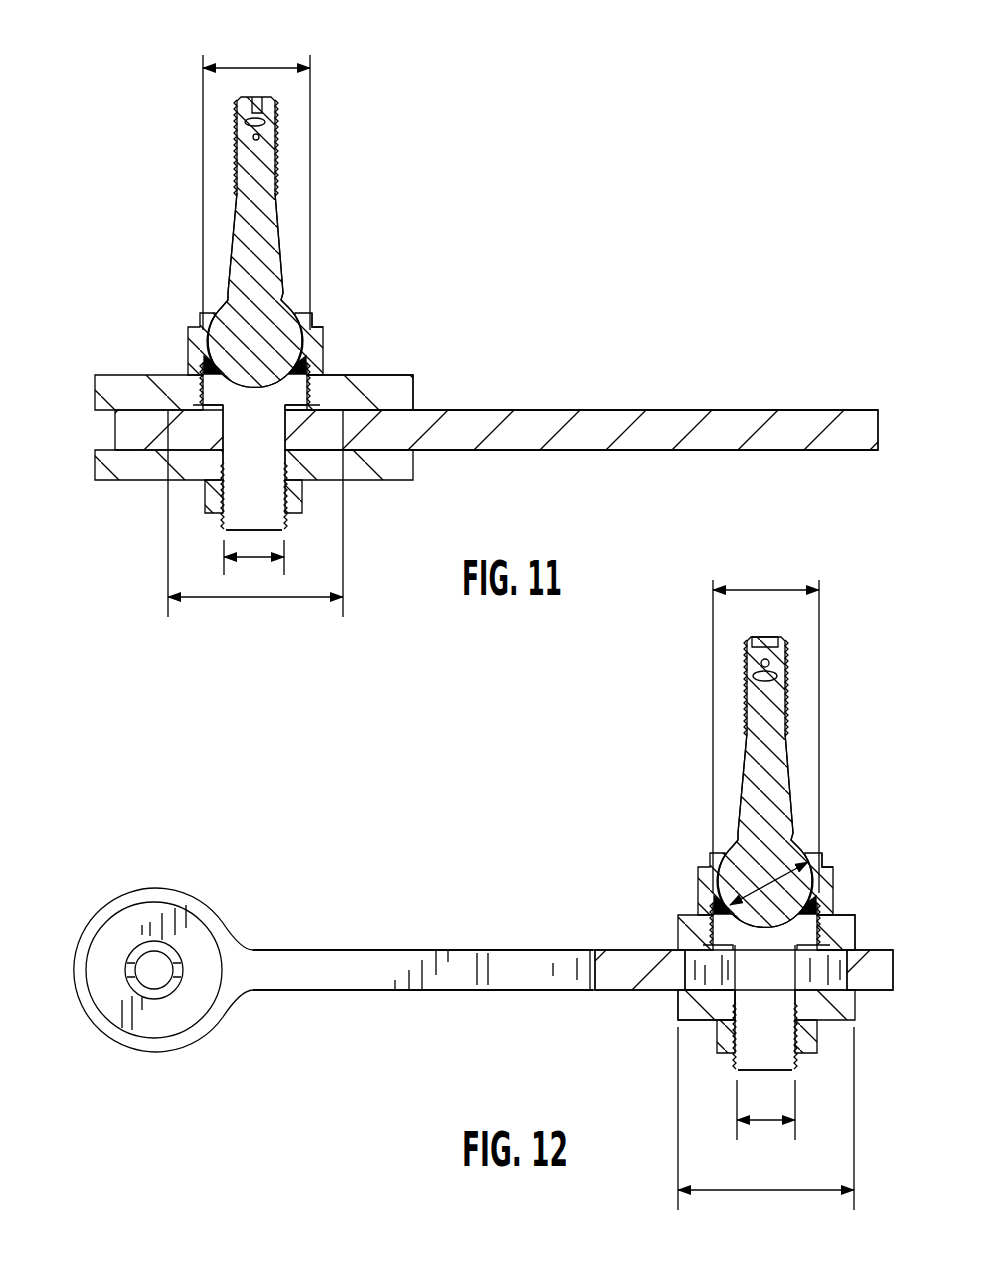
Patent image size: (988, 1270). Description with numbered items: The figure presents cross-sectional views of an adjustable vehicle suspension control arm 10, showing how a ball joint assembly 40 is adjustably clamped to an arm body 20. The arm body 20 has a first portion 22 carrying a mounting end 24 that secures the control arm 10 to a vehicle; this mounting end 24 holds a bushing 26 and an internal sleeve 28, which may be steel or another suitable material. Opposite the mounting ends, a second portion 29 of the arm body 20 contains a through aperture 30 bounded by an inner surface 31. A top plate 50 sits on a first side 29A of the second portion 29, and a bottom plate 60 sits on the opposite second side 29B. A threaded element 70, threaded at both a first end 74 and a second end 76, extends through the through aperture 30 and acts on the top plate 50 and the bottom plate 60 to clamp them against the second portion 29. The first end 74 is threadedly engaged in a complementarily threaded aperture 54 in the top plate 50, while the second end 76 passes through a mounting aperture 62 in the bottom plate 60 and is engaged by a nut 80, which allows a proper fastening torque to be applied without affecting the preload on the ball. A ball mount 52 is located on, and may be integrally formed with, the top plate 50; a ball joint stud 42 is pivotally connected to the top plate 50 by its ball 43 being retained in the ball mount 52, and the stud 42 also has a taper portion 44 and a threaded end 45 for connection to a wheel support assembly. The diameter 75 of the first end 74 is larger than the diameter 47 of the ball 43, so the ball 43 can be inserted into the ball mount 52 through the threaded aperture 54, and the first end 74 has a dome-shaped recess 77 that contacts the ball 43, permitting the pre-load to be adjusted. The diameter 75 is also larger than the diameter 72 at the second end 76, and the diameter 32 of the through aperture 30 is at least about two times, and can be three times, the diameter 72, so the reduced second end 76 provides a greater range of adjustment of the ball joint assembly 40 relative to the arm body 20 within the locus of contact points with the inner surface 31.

In FIG. 11, the adjustable vehicle suspension control arm 10 is at (680, 230).
In FIG. 12, the adjustable vehicle suspension control arm 10 is at (492, 800).
In FIG. 11, the arm body 20 is at (718, 410).
In FIG. 12, the arm body 20 is at (378, 948).
In FIG. 12, the first portion 22 is at (130, 891).
In FIG. 12, the mounting end 24 is at (88, 923).
In FIG. 12, the bushing 26 is at (158, 910).
In FIG. 12, the internal sleeve 28 is at (153, 1000).
In FIG. 11, the second portion 29 is at (598, 420).
In FIG. 12, the second portion 29 is at (466, 962).
In FIG. 11, the first side 29A is at (545, 410).
In FIG. 12, the first side 29A is at (441, 950).
In FIG. 11, the second side 29B is at (505, 452).
In FIG. 12, the second side 29B is at (413, 992).
In FIG. 11, the through aperture 30 is at (327, 447).
In FIG. 12, the through aperture 30 is at (820, 975).
In FIG. 11, the inner surface 31 is at (315, 392).
In FIG. 12, the inner surface 31 is at (840, 965).
In FIG. 11, the diameter of the through aperture 32 is at (262, 600).
In FIG. 12, the diameter of the through aperture 32 is at (768, 1192).
In FIG. 11, the ball joint assembly 40 is at (184, 312).
In FIG. 12, the ball joint assembly 40 is at (700, 858).
In FIG. 11, the ball joint stud 42 is at (282, 203).
In FIG. 12, the ball joint stud 42 is at (790, 728).
In FIG. 11, the ball 43 is at (262, 315).
In FIG. 12, the ball 43 is at (793, 855).
In FIG. 11, the taper portion 44 is at (233, 228).
In FIG. 12, the taper portion 44 is at (742, 773).
In FIG. 11, the threaded end 45 is at (243, 122).
In FIG. 12, the threaded end 45 is at (752, 665).
In FIG. 11, the diameter of the ball 47 is at (300, 327).
In FIG. 12, the diameter of the ball 47 is at (810, 862).
In FIG. 11, the top plate 50 is at (119, 385).
In FIG. 12, the top plate 50 is at (838, 925).
In FIG. 11, the ball mount 52 is at (327, 335).
In FIG. 12, the ball mount 52 is at (837, 877).
In FIG. 11, the threaded aperture 54 is at (212, 411).
In FIG. 12, the threaded aperture 54 is at (717, 978).
In FIG. 11, the bottom plate 60 is at (386, 482).
In FIG. 11, the mounting aperture 62 is at (306, 376).
In FIG. 11, the threaded element 70 is at (247, 437).
In FIG. 12, the threaded element 70 is at (763, 987).
In FIG. 11, the diameter of the threaded element 72 is at (252, 562).
In FIG. 12, the diameter of the threaded element 72 is at (766, 1122).
In FIG. 11, the first end 74 is at (224, 393).
In FIG. 11, the diameter of the first end 75 is at (248, 62).
In FIG. 12, the diameter of the first end 75 is at (758, 584).
In FIG. 11, the second end 76 is at (284, 523).
In FIG. 12, the second end 76 is at (797, 1063).
In FIG. 11, the dome-shaped recess 77 is at (320, 363).
In FIG. 11, the nut 80 is at (293, 496).
In FIG. 12, the nut 80 is at (808, 1033).